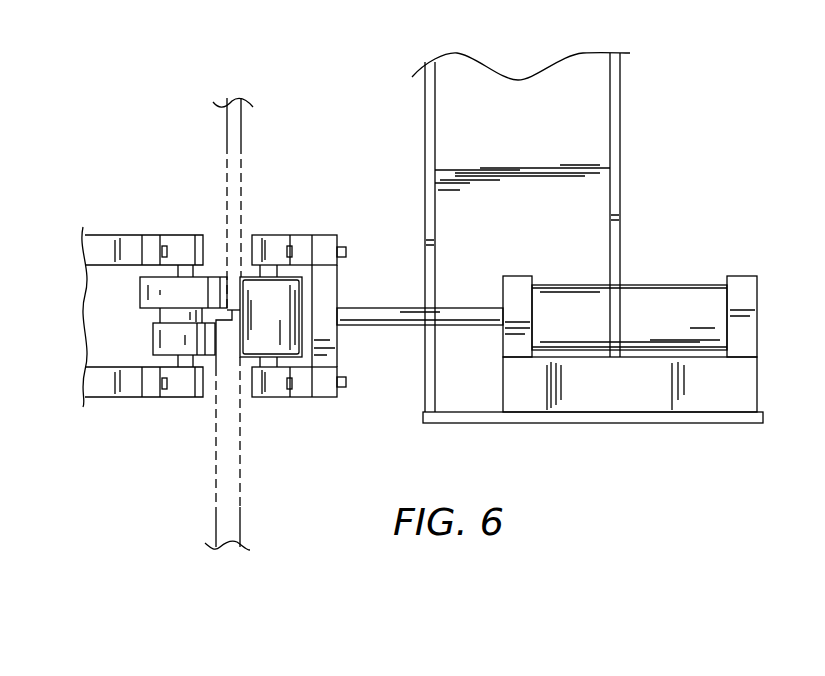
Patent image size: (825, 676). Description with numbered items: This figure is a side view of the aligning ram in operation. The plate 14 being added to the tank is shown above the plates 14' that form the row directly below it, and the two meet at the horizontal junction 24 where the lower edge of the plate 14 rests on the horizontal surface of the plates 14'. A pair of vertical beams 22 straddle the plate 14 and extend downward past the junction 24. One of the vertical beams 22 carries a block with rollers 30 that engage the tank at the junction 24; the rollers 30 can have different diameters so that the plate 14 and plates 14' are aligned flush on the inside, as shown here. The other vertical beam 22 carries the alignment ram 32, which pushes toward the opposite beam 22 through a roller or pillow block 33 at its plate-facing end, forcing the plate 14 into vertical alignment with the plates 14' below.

The plate 14 is at (181, 204).
The plates 14' is at (171, 430).
The vertical beams 22 is at (592, 112).
The horizontal junction 24 is at (237, 317).
The rollers 30 is at (142, 295).
The alignment ram 32 is at (658, 298).
The pillow block 33 is at (267, 340).